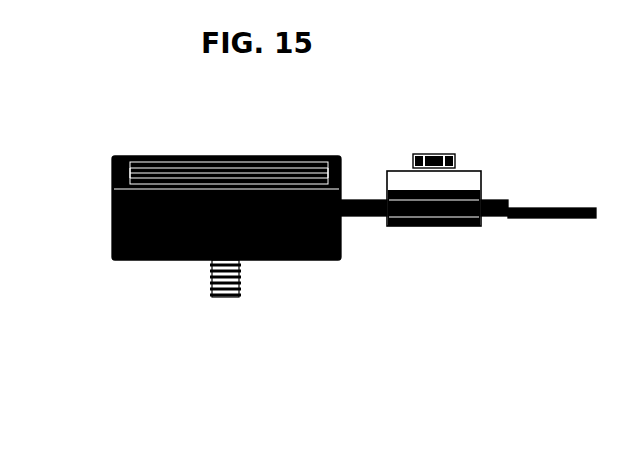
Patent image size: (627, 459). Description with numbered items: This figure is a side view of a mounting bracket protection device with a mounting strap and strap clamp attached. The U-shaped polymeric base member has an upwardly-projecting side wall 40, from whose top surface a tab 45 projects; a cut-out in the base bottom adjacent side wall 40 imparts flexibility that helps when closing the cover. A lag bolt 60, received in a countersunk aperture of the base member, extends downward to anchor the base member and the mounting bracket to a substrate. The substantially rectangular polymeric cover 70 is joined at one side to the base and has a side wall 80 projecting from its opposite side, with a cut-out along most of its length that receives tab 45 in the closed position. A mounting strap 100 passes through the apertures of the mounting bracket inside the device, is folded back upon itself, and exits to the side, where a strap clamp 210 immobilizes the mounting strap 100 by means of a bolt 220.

The side wall 40 is at (125, 251).
The tab 45 is at (270, 170).
The lag bolt 60 is at (244, 282).
The cover 70 is at (218, 140).
The side wall 80 is at (152, 157).
The mounting strap 100 is at (551, 192).
The strap clamp 210 is at (427, 226).
The bolt 220 is at (421, 132).